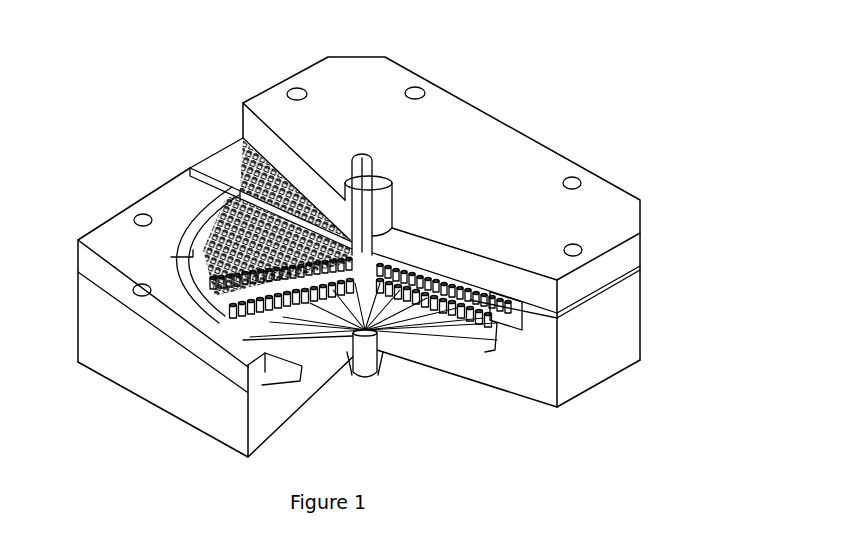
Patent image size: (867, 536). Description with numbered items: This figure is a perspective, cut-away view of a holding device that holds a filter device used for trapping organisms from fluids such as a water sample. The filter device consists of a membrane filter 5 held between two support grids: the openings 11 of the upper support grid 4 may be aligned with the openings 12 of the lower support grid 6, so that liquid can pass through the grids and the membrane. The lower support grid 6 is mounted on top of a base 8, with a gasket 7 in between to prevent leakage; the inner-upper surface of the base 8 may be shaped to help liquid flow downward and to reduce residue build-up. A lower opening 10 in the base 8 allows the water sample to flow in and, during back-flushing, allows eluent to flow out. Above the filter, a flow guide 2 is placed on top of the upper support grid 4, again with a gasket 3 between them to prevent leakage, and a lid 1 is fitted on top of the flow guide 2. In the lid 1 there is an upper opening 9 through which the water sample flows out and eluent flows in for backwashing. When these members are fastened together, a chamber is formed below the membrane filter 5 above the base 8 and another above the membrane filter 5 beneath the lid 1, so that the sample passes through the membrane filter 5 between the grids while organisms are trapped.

The lid 1 is at (416, 203).
The flow guide 2 is at (235, 142).
The gasket 3 is at (217, 207).
The upper support grid 4 is at (134, 259).
The membrane filter 5 is at (259, 294).
The lower support grid 6 is at (270, 335).
The gasket 7 is at (217, 406).
The base 8 is at (359, 403).
The upper opening 9 is at (450, 139).
The lower opening 10 is at (439, 393).
The openings of the upper support grid 11 is at (323, 149).
The openings of the lower support grid 12 is at (361, 367).